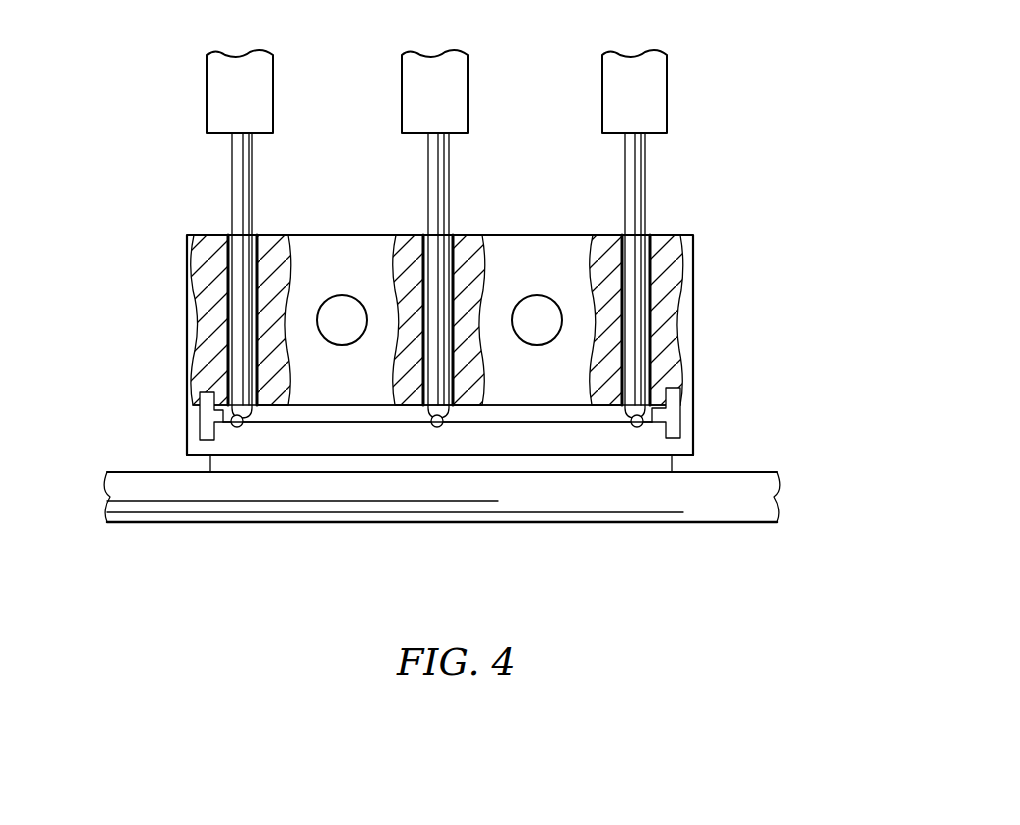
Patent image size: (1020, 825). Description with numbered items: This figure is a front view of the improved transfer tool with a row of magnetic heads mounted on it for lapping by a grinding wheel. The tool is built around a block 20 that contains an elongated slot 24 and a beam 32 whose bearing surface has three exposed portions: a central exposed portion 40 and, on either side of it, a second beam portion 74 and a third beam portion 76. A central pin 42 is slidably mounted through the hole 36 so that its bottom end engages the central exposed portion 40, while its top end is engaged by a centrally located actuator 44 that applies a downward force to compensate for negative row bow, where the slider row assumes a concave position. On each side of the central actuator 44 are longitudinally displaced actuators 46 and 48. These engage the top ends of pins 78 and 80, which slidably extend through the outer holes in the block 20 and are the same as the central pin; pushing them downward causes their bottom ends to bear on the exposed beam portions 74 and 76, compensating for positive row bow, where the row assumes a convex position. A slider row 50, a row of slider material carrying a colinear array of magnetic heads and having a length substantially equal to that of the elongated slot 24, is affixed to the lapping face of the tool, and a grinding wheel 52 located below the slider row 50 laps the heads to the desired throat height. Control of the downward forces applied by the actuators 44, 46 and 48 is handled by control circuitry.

The block 20 is at (353, 275).
The elongated slot 24 is at (358, 417).
The beam 32 is at (535, 420).
The hole 36 is at (480, 497).
The central exposed portion 40 is at (437, 427).
The pin 42 is at (435, 288).
The central actuator 44 is at (457, 93).
The actuator 46 is at (262, 93).
The actuator 48 is at (655, 93).
The slider row 50 is at (580, 462).
The grinding wheel 52 is at (283, 492).
The second beam portion 74 is at (236, 427).
The third beam portion 76 is at (638, 427).
The pin 78 is at (245, 273).
The pin 80 is at (632, 272).